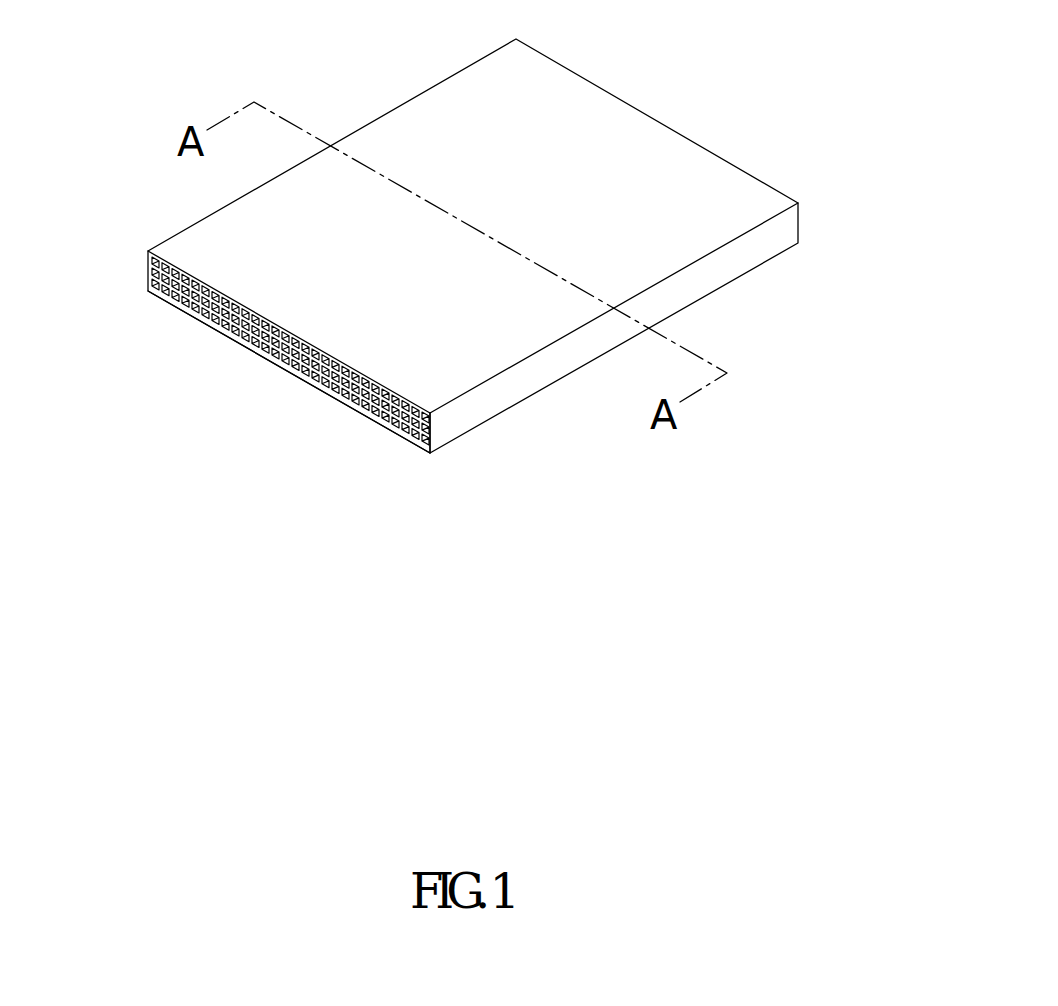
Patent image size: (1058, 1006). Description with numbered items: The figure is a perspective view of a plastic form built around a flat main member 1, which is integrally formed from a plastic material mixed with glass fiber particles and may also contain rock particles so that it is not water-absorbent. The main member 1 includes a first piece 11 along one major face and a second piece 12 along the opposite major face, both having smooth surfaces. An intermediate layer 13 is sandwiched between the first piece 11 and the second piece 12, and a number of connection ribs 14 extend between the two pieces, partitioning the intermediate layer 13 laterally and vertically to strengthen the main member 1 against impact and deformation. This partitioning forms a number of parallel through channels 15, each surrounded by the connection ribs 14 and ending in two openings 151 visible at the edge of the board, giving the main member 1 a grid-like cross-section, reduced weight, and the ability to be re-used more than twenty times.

The main member 1 is at (470, 267).
The first piece 11 is at (600, 128).
The second piece 12 is at (502, 415).
The intermediate layer 13 is at (150, 268).
The connection ribs 14 is at (162, 297).
The through channels 15 is at (271, 381).
The openings 151 is at (312, 373).